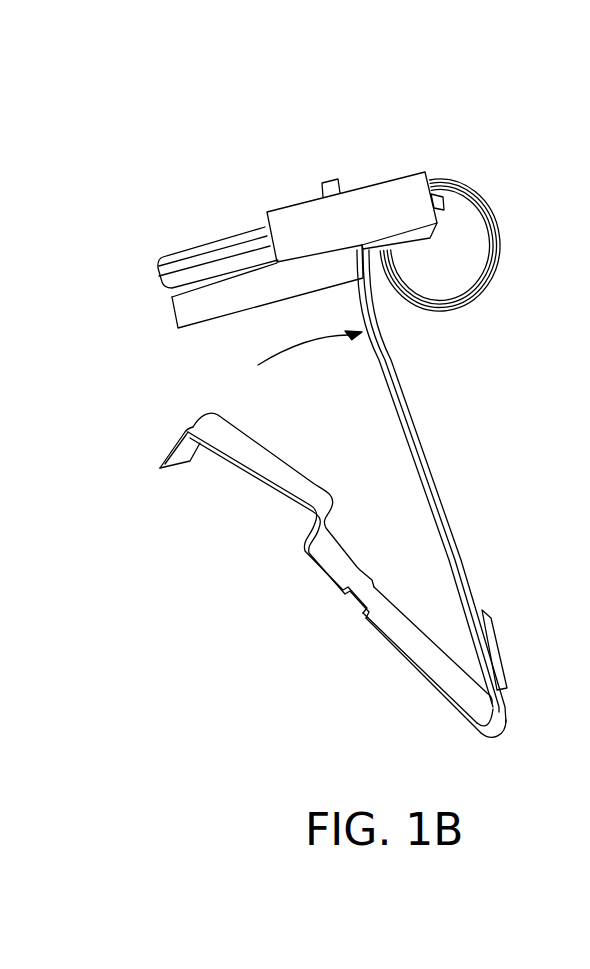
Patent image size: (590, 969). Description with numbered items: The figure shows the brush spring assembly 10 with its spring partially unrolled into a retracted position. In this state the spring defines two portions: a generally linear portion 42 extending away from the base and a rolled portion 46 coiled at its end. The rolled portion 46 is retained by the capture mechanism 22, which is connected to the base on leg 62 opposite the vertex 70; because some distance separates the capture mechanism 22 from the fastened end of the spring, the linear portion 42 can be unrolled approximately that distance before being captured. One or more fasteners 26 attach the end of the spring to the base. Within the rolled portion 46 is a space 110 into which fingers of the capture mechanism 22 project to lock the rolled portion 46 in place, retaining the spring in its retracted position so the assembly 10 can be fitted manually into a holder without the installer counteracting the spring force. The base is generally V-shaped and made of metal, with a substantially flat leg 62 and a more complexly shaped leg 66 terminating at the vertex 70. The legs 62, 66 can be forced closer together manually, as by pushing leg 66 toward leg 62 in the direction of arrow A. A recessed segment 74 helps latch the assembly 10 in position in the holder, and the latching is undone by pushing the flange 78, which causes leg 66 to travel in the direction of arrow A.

The brush spring assembly 10 is at (366, 158).
The capture mechanism 22 is at (285, 205).
The fasteners 26 is at (490, 636).
The generally linear portion 42 is at (432, 464).
The rolled portion 46 is at (495, 215).
The leg 62 is at (413, 452).
The leg 66 is at (398, 655).
The vertex 70 is at (492, 737).
The recessed segment 74 is at (250, 470).
The flange 78 is at (176, 430).
The space 110 is at (458, 230).